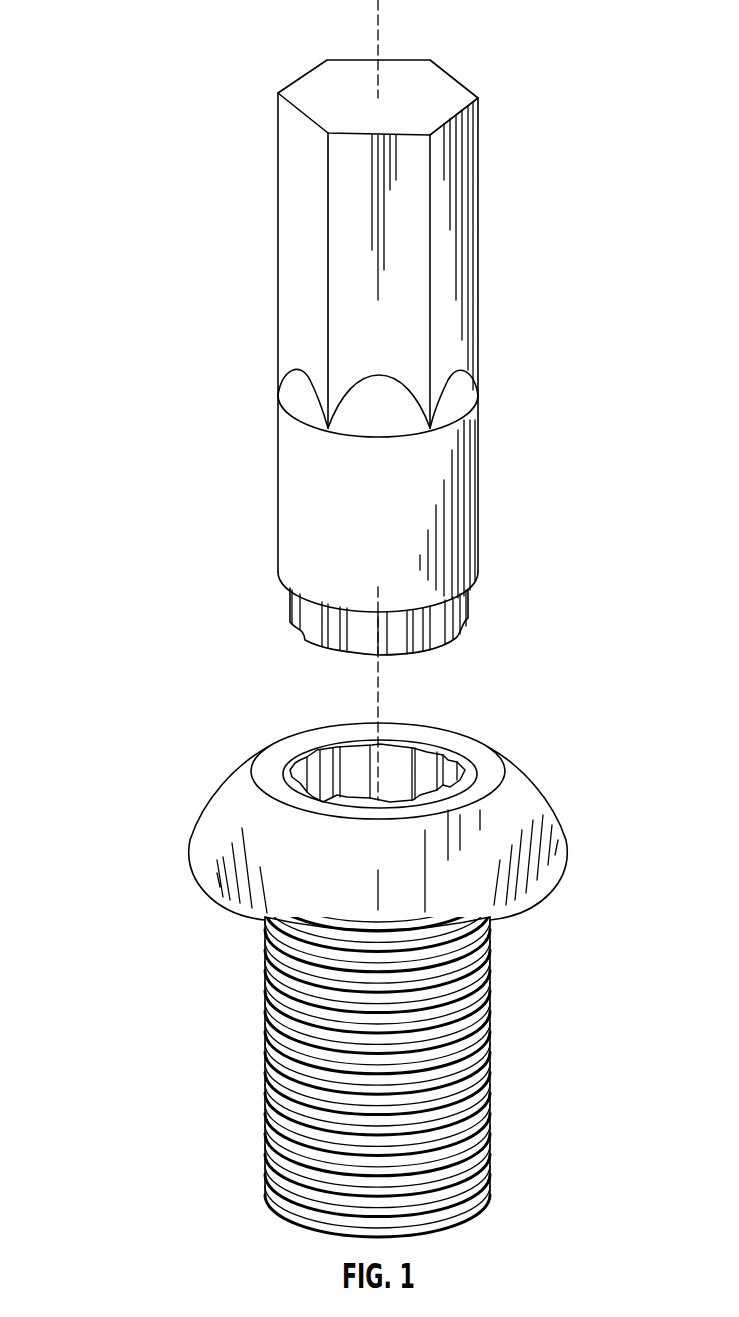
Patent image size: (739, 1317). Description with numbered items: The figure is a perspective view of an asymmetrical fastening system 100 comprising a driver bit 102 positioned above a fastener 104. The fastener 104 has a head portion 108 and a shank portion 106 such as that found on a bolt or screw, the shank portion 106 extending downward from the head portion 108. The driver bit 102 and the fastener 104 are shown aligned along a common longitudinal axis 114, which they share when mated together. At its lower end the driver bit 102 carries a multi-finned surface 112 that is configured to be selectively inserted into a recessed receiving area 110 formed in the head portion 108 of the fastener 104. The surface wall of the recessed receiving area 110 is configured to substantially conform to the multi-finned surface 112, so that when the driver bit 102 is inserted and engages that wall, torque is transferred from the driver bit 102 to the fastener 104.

The asymmetrical fastening system 100 is at (135, 35).
The driver bit 102 is at (270, 195).
The fastener 104 is at (168, 652).
The shank portion 106 is at (300, 973).
The head portion 108 is at (227, 787).
The recessed receiving area 110 is at (392, 773).
The multi-finned surface 112 is at (483, 600).
The common longitudinal axis 114 is at (380, 38).